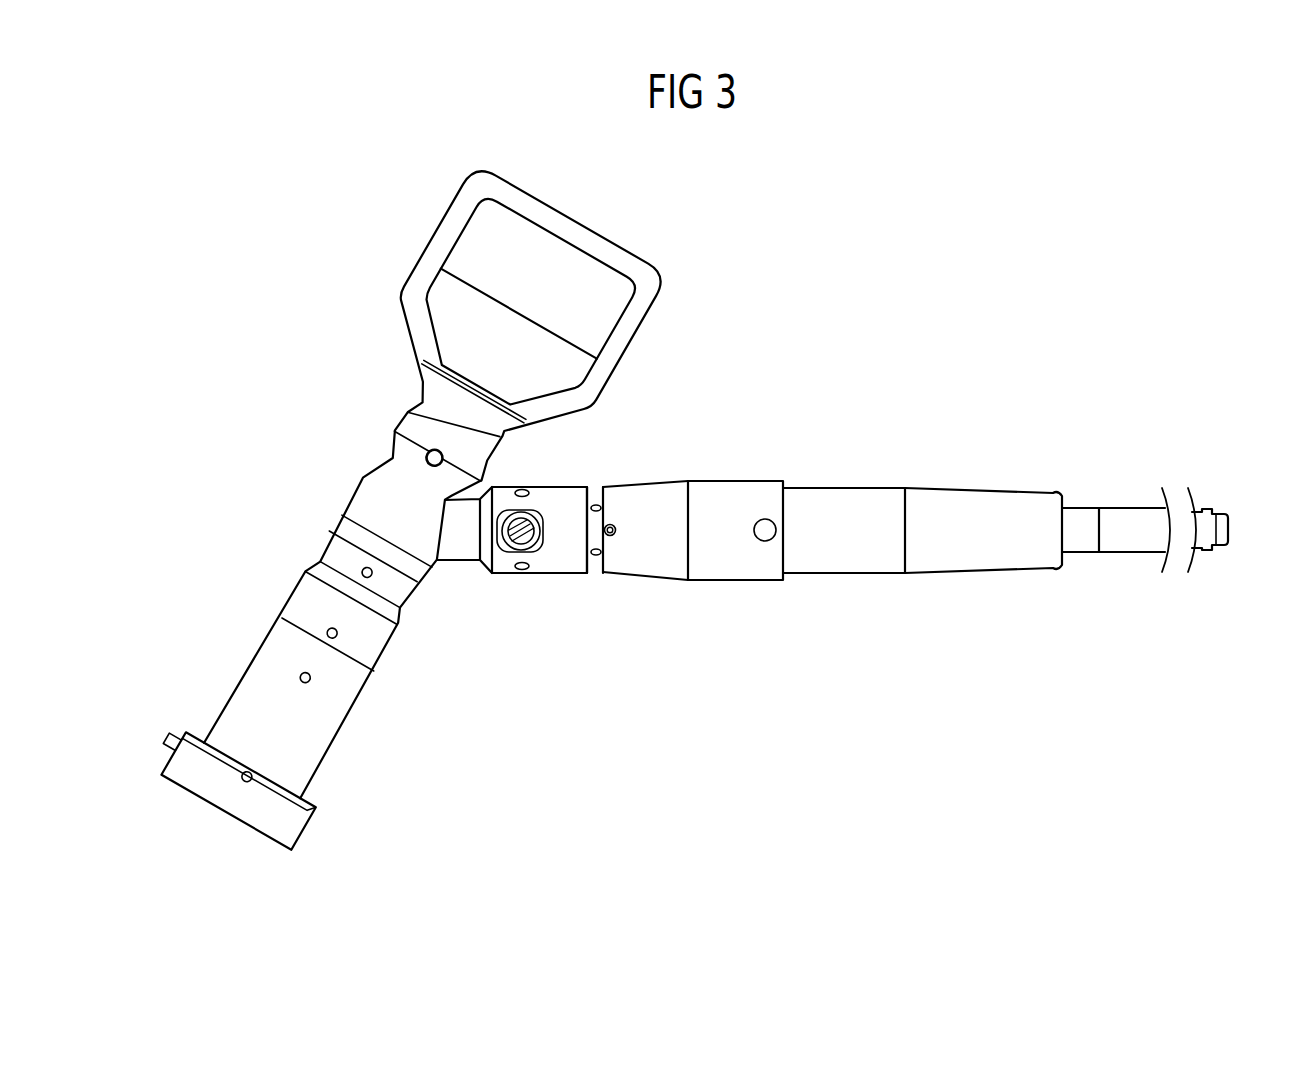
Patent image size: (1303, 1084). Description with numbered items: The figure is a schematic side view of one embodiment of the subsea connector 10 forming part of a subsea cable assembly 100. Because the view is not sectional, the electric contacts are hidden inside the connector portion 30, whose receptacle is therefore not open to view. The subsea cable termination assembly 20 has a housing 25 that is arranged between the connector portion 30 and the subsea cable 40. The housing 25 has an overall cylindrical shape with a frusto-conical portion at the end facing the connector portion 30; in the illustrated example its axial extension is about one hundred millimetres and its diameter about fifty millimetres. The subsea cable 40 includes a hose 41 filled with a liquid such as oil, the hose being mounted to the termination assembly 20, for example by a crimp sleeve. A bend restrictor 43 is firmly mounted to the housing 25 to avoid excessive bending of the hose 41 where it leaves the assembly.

The subsea cable assembly 100 is at (1198, 228).
The subsea connector 10 is at (257, 510).
The connector portion 30 is at (583, 875).
The subsea cable termination assembly 20 is at (783, 615).
The housing 25 is at (741, 478).
The subsea cable 40 is at (1055, 397).
The bend restrictor 43 is at (857, 573).
The hose 41 is at (1123, 508).